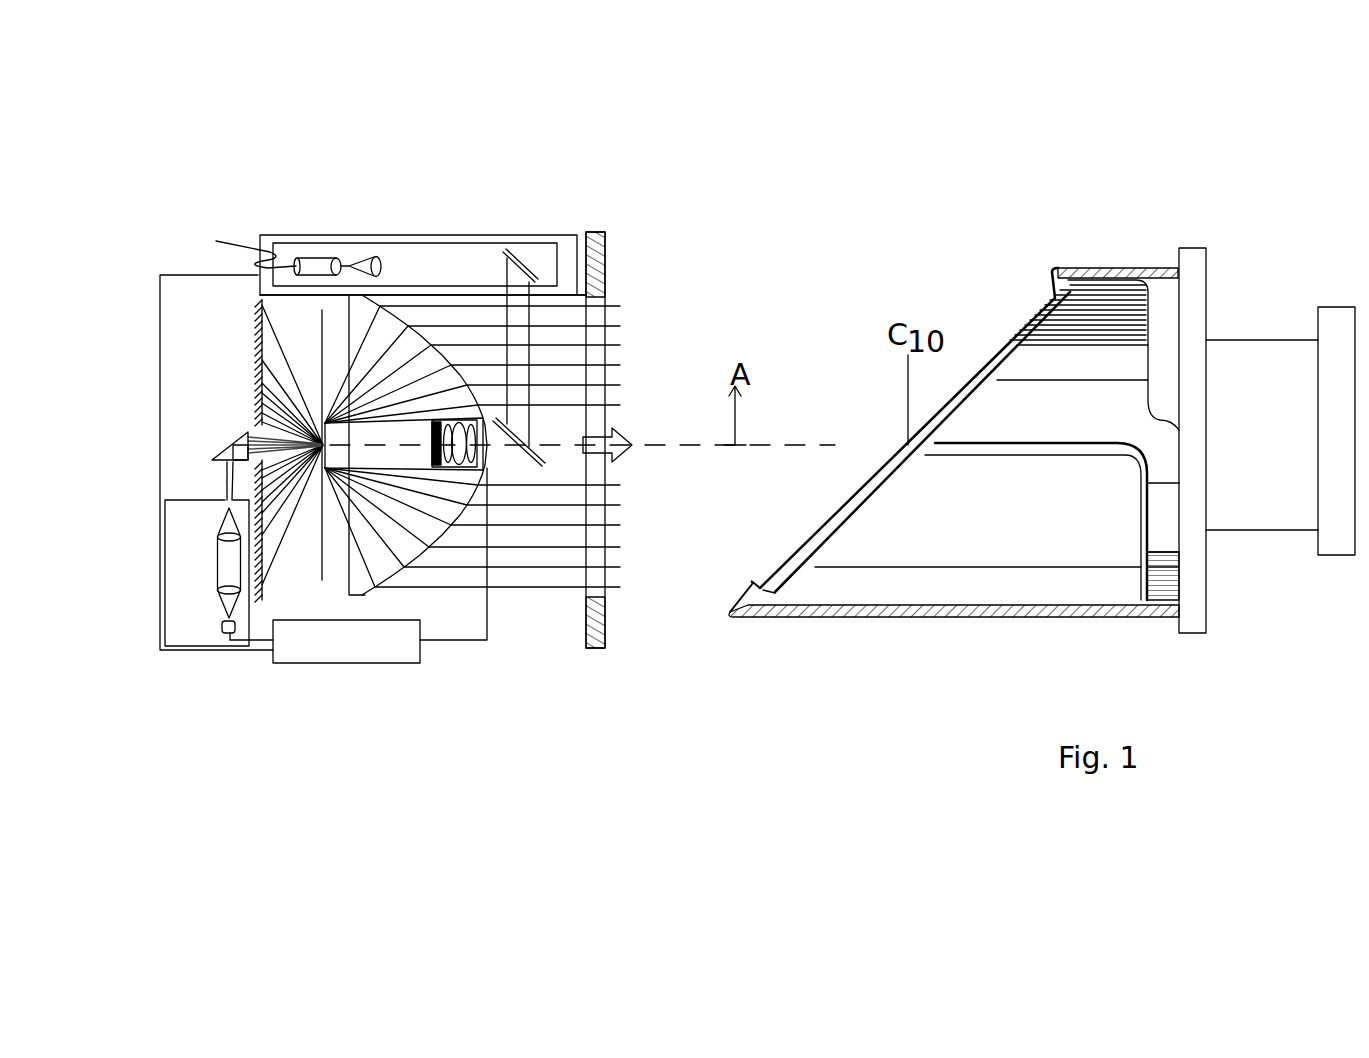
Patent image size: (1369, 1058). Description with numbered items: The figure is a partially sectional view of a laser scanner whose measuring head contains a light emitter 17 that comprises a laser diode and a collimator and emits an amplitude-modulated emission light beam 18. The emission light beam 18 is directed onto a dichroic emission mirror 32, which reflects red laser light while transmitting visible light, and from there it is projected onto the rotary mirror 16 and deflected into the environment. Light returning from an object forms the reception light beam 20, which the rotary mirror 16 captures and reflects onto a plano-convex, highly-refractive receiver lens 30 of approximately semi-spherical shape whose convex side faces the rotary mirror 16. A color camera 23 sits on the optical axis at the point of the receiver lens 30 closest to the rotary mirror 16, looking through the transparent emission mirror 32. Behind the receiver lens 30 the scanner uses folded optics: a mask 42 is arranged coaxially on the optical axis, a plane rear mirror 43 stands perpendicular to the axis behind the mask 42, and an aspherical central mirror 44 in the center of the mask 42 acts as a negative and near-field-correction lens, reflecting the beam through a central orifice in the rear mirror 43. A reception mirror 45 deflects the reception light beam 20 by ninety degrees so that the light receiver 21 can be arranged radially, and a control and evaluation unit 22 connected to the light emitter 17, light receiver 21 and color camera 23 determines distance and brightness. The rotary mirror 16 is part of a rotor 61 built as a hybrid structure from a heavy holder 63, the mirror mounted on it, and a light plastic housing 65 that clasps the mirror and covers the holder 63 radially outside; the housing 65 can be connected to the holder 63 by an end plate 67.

The rotary mirror 16 is at (1010, 345).
The light emitter 17 is at (437, 246).
The emission light beam 18 is at (618, 458).
The reception light beam 20 is at (615, 305).
The light receiver 21 is at (183, 622).
The control and evaluation unit 22 is at (365, 648).
The color camera 23 is at (485, 470).
The receiver lens 30 is at (392, 570).
The emission mirror 32 is at (530, 455).
The mask 42 is at (322, 580).
The rear mirror 43 is at (262, 635).
The central mirror 44 is at (265, 575).
The reception mirror 45 is at (222, 463).
The rotor 61 is at (1148, 255).
The holder 63 is at (1112, 410).
The housing 65 is at (830, 612).
The end plate 67 is at (1192, 603).